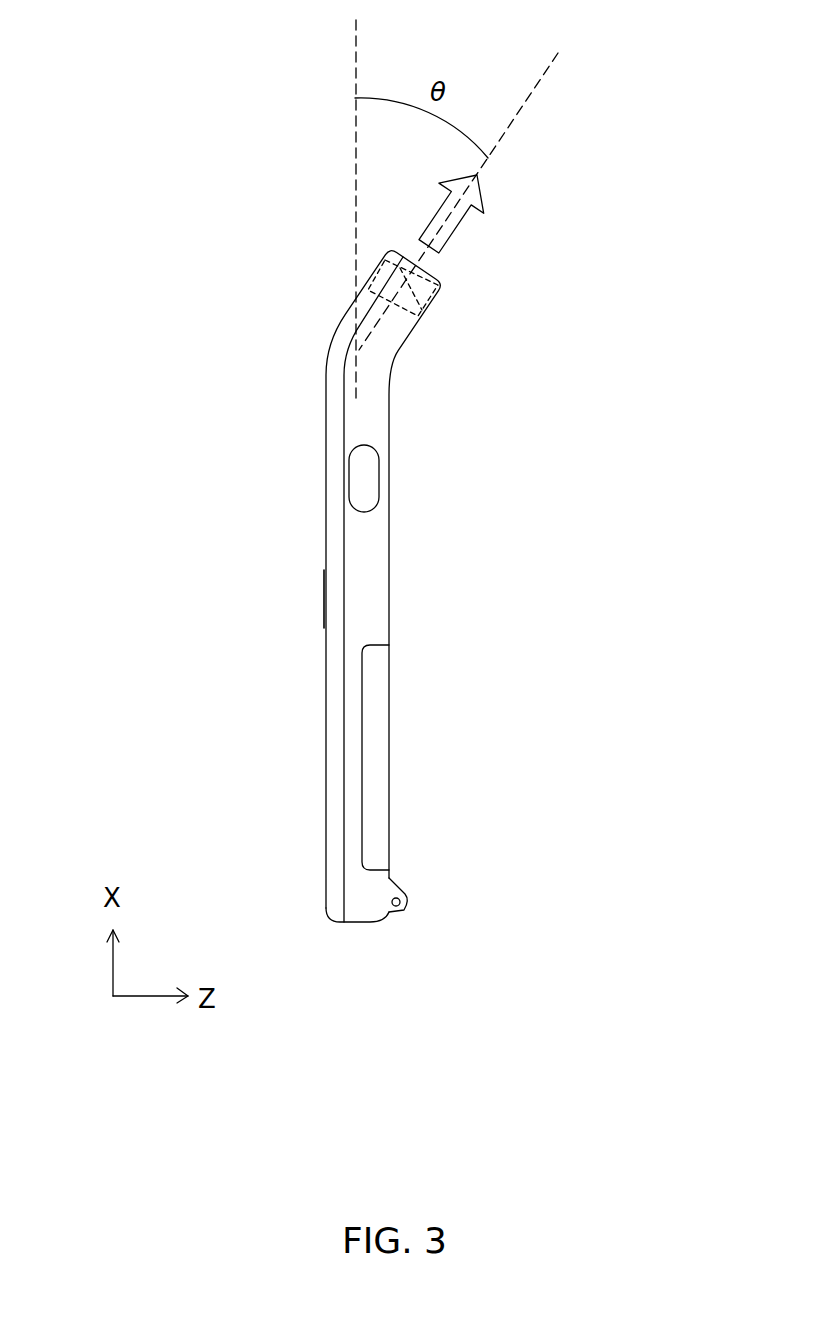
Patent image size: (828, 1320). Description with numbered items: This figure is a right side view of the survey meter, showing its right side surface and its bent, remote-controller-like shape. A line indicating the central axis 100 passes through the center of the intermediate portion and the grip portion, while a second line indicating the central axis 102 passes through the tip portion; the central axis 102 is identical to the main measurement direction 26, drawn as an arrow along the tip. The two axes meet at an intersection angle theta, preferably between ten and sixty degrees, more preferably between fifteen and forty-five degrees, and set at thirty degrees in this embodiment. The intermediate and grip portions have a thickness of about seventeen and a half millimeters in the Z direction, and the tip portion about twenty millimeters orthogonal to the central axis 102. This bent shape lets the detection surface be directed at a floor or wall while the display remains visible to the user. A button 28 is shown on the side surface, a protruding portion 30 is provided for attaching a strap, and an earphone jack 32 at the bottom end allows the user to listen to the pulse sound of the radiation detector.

The central axis 100 is at (355, 52).
The central axis 102 is at (517, 115).
The main measurement direction 26 is at (456, 228).
The operation button 28 is at (365, 485).
The protruding portion 30 is at (409, 899).
The earphone jack 32 is at (357, 922).